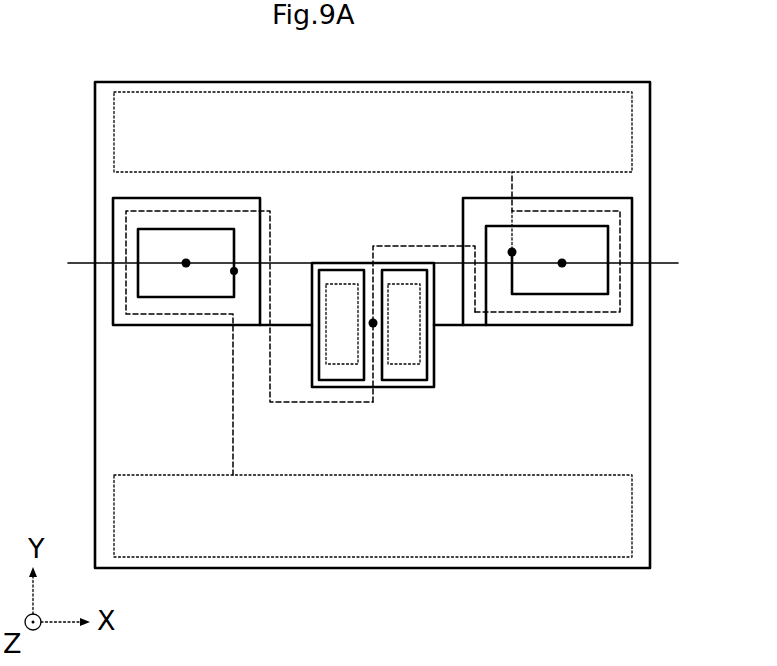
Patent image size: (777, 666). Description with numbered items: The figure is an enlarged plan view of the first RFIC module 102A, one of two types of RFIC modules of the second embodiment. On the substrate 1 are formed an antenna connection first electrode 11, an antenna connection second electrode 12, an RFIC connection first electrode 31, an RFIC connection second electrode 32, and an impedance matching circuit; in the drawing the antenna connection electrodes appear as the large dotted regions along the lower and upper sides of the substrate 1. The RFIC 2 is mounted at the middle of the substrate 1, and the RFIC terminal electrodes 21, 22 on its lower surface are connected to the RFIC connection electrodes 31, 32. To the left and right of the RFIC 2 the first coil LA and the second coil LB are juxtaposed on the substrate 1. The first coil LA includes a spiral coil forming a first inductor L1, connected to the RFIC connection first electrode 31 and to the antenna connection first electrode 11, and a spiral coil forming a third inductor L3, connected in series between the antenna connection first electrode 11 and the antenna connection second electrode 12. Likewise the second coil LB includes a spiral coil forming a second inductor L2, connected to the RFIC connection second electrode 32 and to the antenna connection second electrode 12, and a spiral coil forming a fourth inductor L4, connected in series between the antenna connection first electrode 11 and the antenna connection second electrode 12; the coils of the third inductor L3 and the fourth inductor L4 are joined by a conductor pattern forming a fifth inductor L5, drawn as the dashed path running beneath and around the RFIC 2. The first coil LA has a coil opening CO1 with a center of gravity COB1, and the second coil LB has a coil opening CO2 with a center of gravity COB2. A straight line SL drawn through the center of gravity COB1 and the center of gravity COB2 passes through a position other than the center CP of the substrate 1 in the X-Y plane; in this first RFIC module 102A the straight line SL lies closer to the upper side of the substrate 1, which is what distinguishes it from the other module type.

The first RFIC module 102A is at (100, 60).
The substrate 1 is at (632, 455).
The antenna connection first electrode 11 is at (372, 537).
The antenna connection second electrode 12 is at (612, 132).
The RFIC 2 is at (366, 387).
The RFIC terminal electrode 21 is at (348, 283).
The RFIC terminal electrode 22 is at (407, 367).
The RFIC connection first electrode 31 is at (325, 262).
The RFIC connection second electrode 32 is at (428, 388).
The first inductor L1 is at (184, 325).
The second inductor L2 is at (553, 325).
The third inductor L3 is at (127, 257).
The fourth inductor L4 is at (622, 272).
The fifth inductor L5 is at (415, 247).
The first coil LA is at (122, 347).
The second coil LB is at (617, 340).
The straight line SL is at (660, 263).
The center of the substrate CP is at (373, 323).
The center of gravity of the coil opening of the first coil COB1 is at (186, 263).
The center of gravity of the coil opening of the second coil COB2 is at (562, 263).
The coil opening of the first coil CO1 is at (150, 284).
The coil opening of the second coil CO2 is at (595, 282).